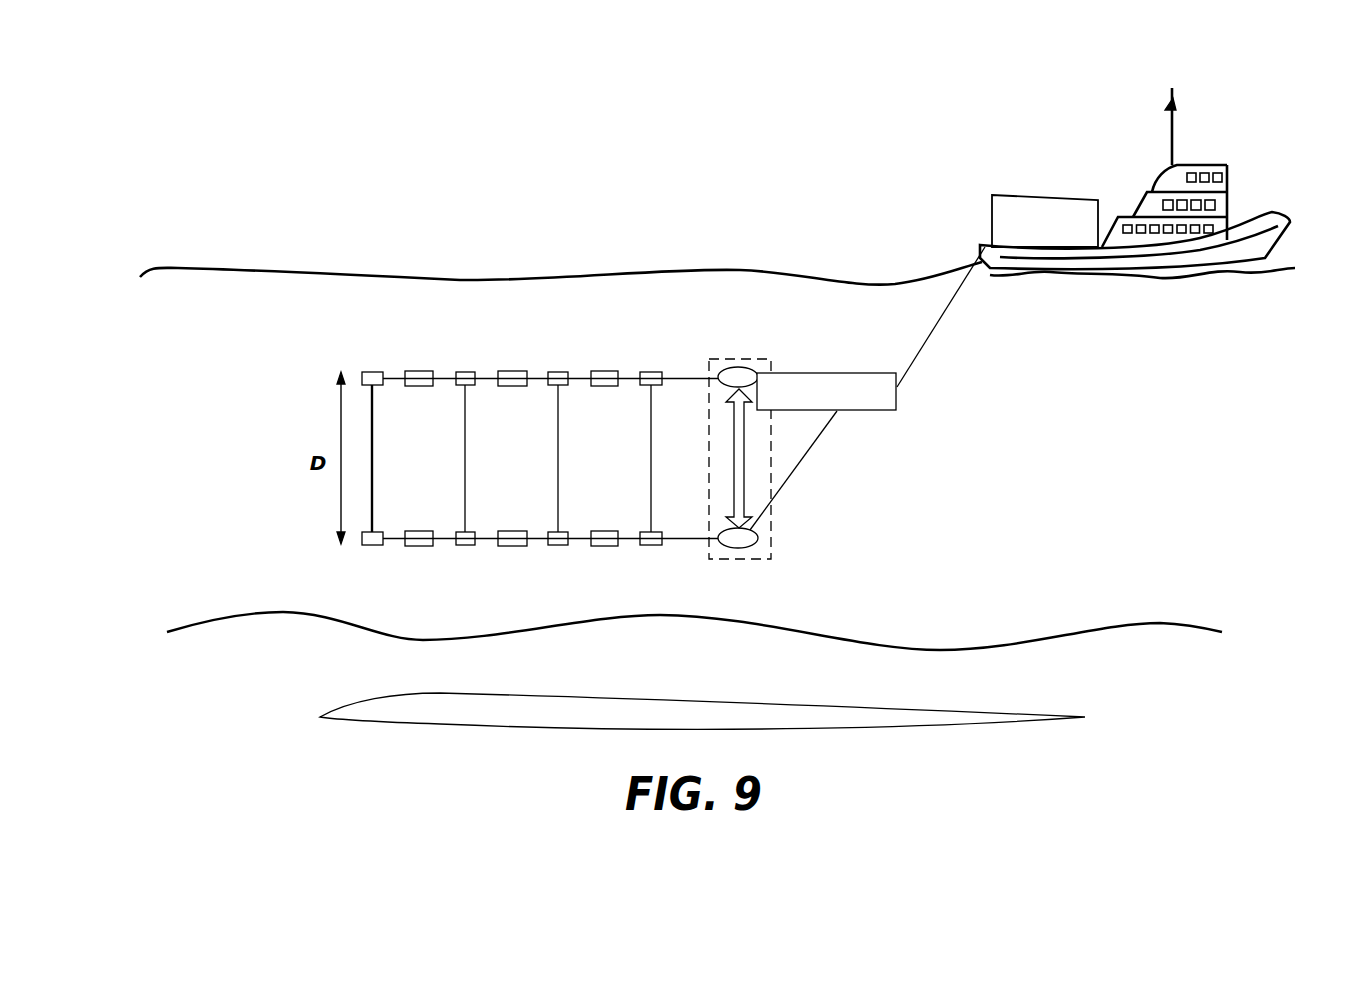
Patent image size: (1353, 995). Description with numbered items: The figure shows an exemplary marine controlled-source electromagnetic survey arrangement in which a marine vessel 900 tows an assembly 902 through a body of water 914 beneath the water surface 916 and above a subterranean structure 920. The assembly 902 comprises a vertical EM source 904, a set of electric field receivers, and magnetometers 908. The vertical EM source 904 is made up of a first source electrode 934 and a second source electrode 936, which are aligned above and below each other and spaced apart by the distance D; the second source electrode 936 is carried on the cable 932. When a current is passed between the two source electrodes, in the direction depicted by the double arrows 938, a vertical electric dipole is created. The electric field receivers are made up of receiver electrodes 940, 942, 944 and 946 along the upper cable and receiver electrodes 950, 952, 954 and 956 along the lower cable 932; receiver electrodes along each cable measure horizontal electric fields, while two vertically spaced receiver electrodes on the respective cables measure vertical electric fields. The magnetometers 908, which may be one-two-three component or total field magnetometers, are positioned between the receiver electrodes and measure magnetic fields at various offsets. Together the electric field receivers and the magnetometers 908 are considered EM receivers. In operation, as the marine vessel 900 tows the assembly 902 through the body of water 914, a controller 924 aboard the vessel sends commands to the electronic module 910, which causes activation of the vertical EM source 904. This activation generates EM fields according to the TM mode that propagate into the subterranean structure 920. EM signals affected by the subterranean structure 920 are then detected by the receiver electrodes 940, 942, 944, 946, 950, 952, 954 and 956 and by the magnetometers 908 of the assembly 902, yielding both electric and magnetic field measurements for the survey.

The marine vessel 900 is at (1258, 212).
The assembly 902 is at (306, 318).
The vertical EM source 904 is at (771, 358).
The magnetometers 908 is at (415, 370).
The electronic module 910 is at (838, 373).
The body of water 914 is at (1145, 528).
The water surface 916 is at (423, 274).
The subterranean structure 920 is at (694, 670).
The controller 924 is at (1005, 195).
The cable 932 is at (709, 540).
The first source electrode 934 is at (733, 364).
The second source electrode 936 is at (745, 548).
The double arrows 938 is at (733, 449).
The receiver electrode 940 is at (651, 371).
The receiver electrode 942 is at (558, 371).
The receiver electrode 944 is at (465, 371).
The receiver electrode 946 is at (372, 371).
The receiver electrode 950 is at (651, 546).
The receiver electrode 952 is at (558, 546).
The receiver electrode 954 is at (465, 546).
The receiver electrode 956 is at (372, 546).